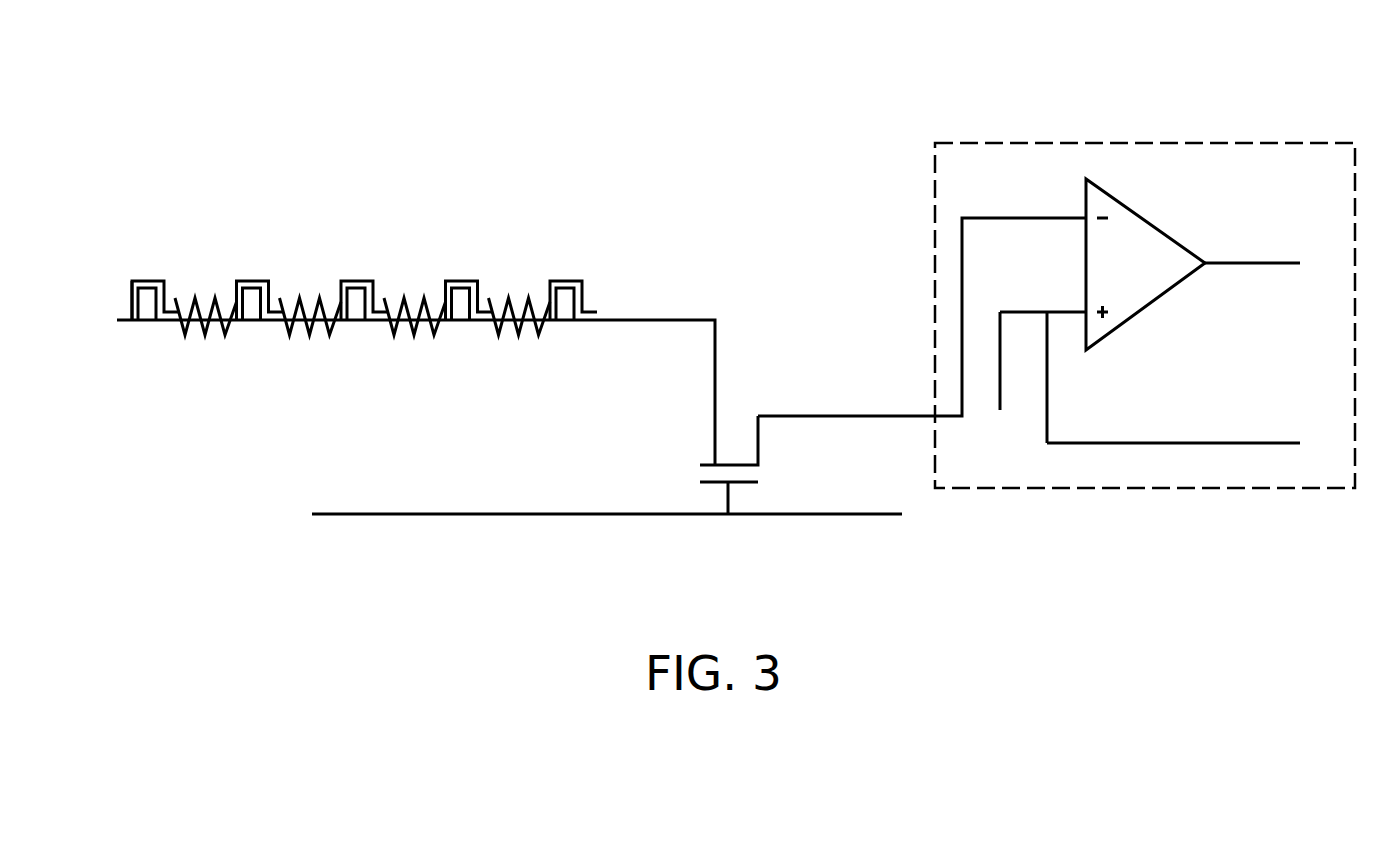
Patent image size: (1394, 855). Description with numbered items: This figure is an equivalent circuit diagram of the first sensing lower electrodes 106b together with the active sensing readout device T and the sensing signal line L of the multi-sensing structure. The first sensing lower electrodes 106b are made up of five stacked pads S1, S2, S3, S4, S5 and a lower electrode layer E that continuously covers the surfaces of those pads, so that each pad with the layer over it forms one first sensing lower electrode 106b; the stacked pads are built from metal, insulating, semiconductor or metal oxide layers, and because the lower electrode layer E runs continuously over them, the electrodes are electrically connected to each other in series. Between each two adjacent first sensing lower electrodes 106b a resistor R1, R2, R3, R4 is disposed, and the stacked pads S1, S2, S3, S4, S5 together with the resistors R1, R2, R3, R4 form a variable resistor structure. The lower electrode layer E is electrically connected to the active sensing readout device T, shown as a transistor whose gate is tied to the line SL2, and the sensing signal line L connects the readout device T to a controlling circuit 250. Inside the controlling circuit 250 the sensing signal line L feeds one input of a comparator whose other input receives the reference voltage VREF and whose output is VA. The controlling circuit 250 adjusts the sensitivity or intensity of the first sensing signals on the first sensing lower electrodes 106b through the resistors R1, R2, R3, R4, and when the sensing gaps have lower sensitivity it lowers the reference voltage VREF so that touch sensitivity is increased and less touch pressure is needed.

The first sensing lower electrode 106b is at (139, 194).
The lower electrode layer E is at (133, 307).
The stacked pad S1 is at (147, 300).
The stacked pad S2 is at (252, 300).
The stacked pad S3 is at (356, 300).
The stacked pad S4 is at (460, 300).
The stacked pad S5 is at (565, 300).
The resistor R1 is at (207, 328).
The resistor R2 is at (312, 328).
The resistor R3 is at (417, 328).
The resistor R4 is at (522, 328).
The active sensing readout device T is at (738, 407).
The sensing signal line L is at (857, 415).
The scan line SL2 is at (382, 514).
The controlling circuit 250 is at (1122, 143).
The output voltage VA is at (1273, 269).
The reference voltage VREF is at (1204, 449).